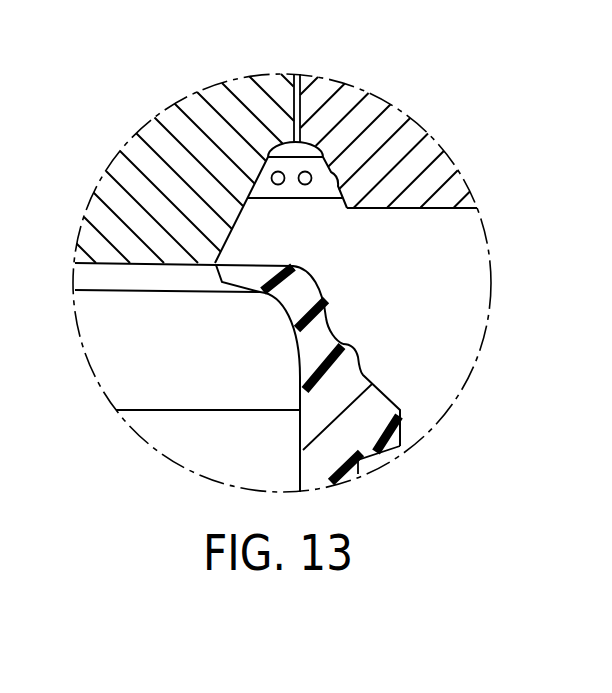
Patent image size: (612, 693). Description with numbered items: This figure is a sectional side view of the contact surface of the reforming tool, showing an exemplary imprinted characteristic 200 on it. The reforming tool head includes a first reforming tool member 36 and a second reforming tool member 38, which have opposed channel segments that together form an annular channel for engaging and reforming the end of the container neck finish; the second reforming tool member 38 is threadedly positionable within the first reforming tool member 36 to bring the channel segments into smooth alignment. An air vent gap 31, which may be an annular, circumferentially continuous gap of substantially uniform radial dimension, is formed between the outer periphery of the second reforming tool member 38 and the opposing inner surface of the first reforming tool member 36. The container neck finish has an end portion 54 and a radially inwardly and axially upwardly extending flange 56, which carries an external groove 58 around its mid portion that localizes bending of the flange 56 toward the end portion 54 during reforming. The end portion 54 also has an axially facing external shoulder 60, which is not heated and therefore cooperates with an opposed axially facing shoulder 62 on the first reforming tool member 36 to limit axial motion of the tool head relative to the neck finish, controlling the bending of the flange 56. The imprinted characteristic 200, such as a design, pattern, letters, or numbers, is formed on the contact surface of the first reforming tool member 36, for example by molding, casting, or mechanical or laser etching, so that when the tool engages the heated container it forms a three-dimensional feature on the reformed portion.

The air vent gap 31 is at (295, 72).
The first reforming tool member 36 is at (327, 88).
The second reforming tool member 38 is at (191, 101).
The neck finish end portion 54 is at (320, 320).
The flange 56 is at (283, 298).
The external groove 58 is at (322, 283).
The axially facing external shoulder 60 is at (343, 347).
The axially facing shoulder 62 is at (403, 208).
The imprinted characteristic 200 is at (305, 185).